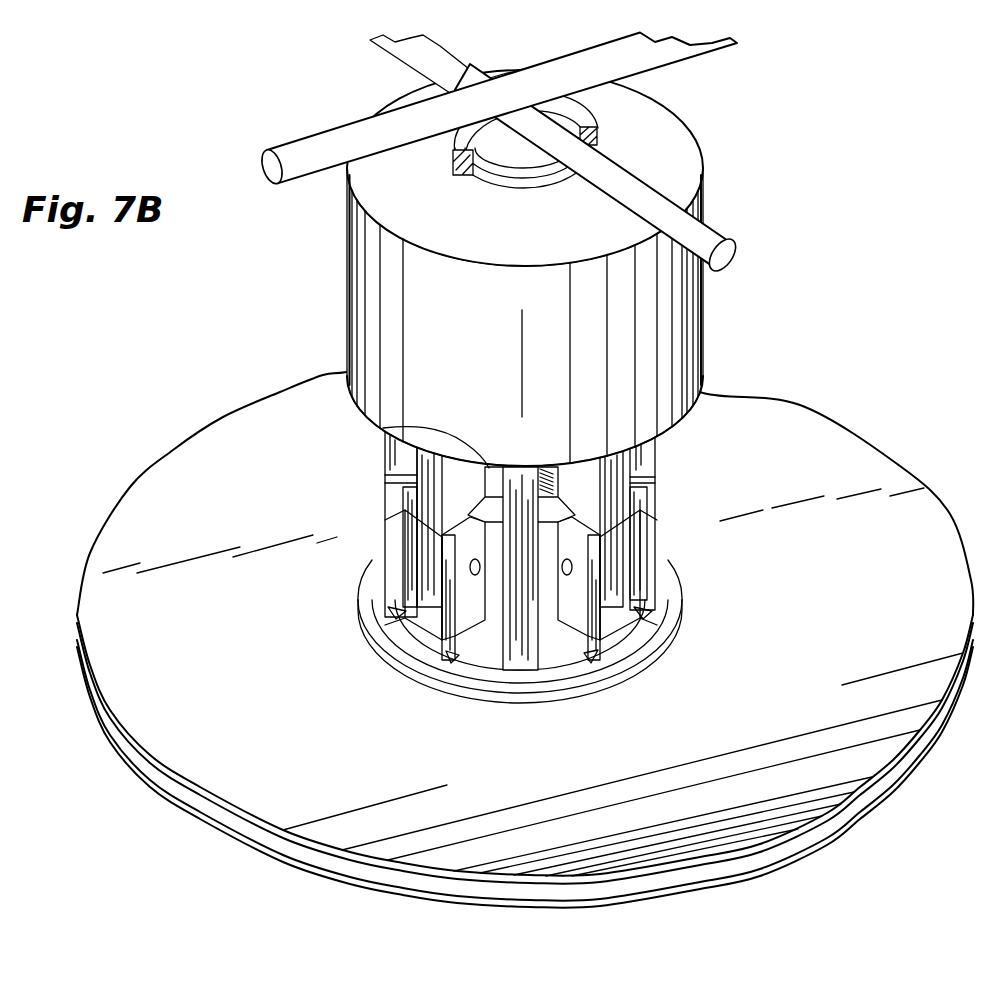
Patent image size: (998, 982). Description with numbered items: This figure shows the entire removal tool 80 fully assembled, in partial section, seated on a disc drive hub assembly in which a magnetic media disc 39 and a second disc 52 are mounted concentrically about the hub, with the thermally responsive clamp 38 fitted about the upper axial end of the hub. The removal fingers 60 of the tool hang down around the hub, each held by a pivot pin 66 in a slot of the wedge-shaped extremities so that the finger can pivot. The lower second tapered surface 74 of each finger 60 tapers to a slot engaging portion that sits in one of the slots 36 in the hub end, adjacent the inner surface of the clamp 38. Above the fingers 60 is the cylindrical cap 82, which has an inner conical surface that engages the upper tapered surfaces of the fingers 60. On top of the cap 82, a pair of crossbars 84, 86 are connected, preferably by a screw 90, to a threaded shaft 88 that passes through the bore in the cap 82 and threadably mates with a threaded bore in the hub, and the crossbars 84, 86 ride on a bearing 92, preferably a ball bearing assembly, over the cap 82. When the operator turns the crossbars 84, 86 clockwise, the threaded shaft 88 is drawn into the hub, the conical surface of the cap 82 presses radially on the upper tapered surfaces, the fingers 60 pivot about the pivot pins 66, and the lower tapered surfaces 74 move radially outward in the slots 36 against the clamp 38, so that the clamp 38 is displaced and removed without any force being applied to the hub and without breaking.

The slots 36 is at (392, 610).
The thermally responsive clamp 38 is at (640, 655).
The magnetic media disc 39 is at (912, 606).
The disc 52 is at (917, 763).
The removal fingers 60 is at (652, 453).
The pivot pin 66 is at (468, 565).
The second tapered surface 74 is at (448, 632).
The removal tool 80 is at (710, 182).
The cylindrical cap 82 is at (468, 334).
The crossbar 84 is at (687, 55).
The crossbar 86 is at (405, 56).
The threaded shaft 88 is at (497, 163).
The screw 90 is at (423, 77).
The bearing 92 is at (599, 133).